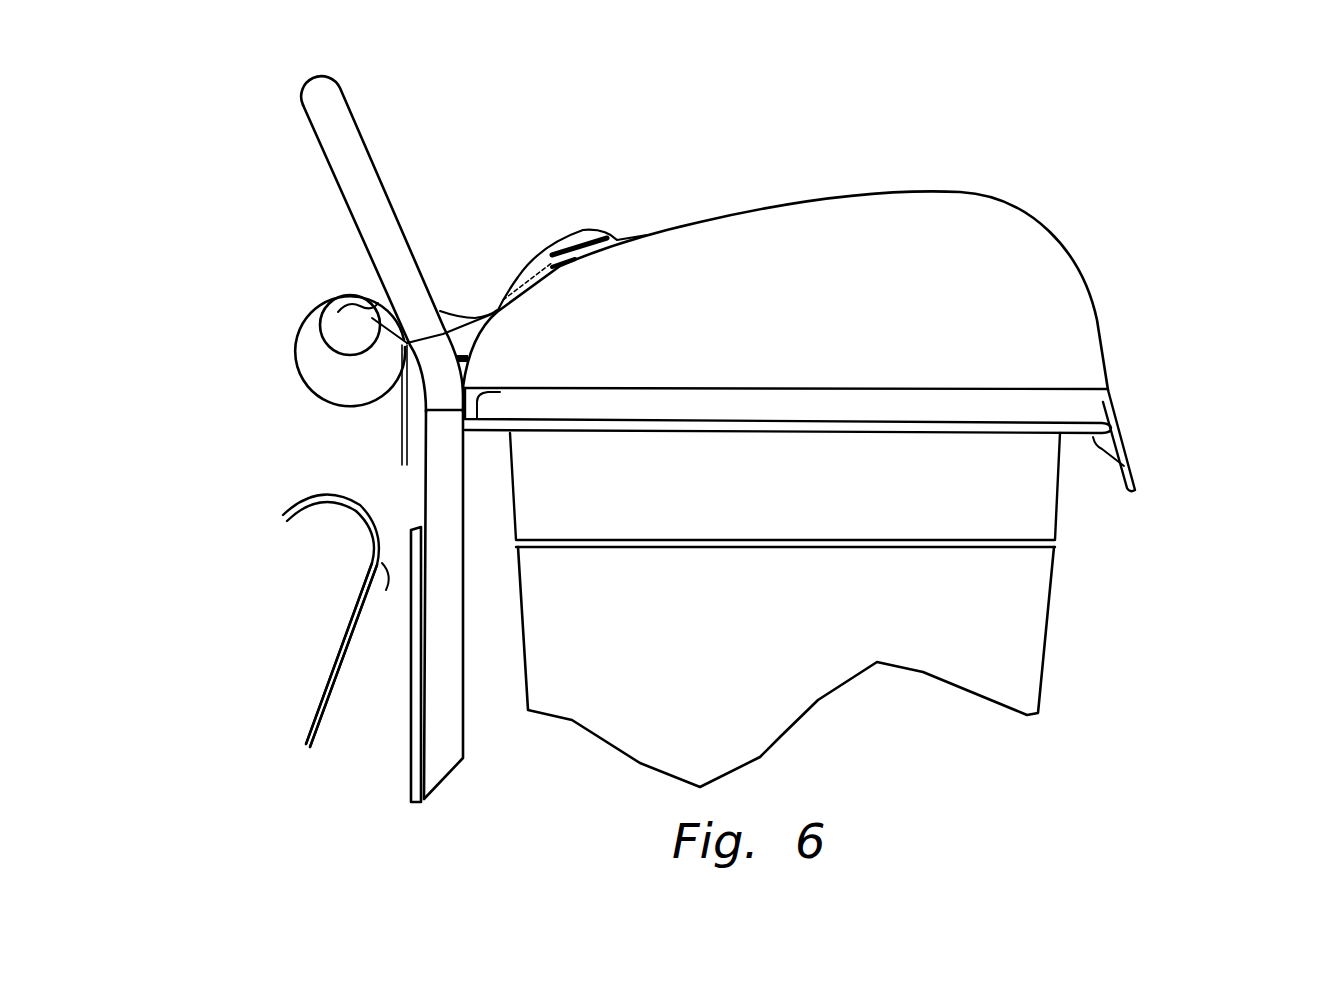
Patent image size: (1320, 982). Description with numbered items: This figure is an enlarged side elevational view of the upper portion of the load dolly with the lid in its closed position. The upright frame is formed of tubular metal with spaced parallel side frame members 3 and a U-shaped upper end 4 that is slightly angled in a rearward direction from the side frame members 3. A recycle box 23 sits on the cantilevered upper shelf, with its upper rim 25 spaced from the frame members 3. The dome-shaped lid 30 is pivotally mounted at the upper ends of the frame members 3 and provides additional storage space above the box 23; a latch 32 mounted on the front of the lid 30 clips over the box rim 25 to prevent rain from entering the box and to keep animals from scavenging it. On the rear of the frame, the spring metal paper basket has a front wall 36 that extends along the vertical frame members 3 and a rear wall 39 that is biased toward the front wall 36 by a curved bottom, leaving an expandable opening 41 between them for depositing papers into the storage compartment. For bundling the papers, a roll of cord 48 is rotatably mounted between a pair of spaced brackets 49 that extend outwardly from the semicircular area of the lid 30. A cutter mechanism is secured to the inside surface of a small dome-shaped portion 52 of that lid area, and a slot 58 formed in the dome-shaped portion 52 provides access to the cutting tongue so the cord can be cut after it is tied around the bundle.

The side frame members 3 is at (445, 725).
The U-shaped upper end 4 is at (323, 127).
The recycle box 23 is at (1017, 623).
The upper rim 25 is at (1060, 427).
The lid 30 is at (1000, 194).
The latch 32 is at (1132, 460).
The front wall 36 is at (407, 620).
The rear wall 39 is at (330, 665).
The expandable opening 41 is at (372, 555).
The roll of cord 48 is at (298, 350).
The brackets 49 is at (345, 328).
The dome-shaped portion 52 is at (560, 240).
The slot 58 is at (593, 238).